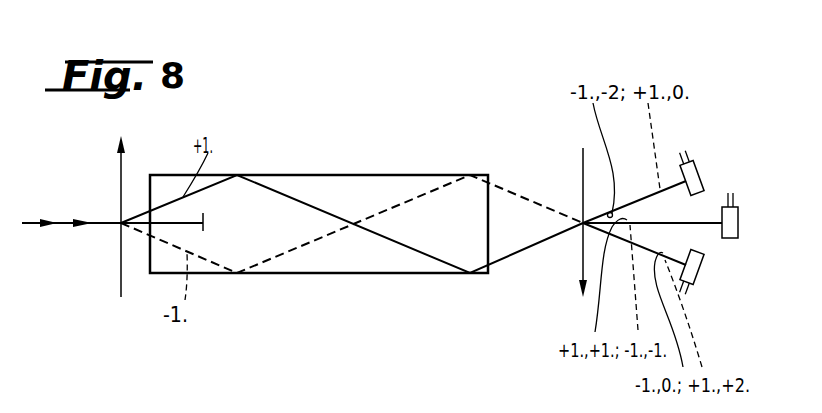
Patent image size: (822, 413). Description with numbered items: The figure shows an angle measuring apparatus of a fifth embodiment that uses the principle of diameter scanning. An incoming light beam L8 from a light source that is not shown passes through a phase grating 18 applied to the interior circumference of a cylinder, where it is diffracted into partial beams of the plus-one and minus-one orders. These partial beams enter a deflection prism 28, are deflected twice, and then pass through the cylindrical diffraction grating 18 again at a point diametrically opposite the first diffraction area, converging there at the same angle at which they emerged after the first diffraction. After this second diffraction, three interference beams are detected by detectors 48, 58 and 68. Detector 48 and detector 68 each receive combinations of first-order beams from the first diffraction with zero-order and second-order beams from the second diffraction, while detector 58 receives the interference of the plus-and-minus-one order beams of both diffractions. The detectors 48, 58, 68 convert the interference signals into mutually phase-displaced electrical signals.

The incident light beam L8 is at (28, 223).
The phase grating 18 is at (123, 165).
The deflection prism 28 is at (352, 193).
The detector 48 is at (690, 178).
The detector 58 is at (727, 225).
The detector 68 is at (693, 277).